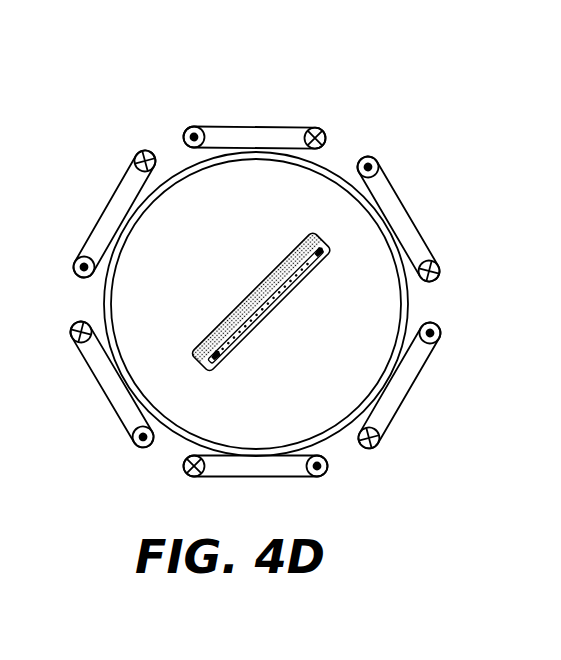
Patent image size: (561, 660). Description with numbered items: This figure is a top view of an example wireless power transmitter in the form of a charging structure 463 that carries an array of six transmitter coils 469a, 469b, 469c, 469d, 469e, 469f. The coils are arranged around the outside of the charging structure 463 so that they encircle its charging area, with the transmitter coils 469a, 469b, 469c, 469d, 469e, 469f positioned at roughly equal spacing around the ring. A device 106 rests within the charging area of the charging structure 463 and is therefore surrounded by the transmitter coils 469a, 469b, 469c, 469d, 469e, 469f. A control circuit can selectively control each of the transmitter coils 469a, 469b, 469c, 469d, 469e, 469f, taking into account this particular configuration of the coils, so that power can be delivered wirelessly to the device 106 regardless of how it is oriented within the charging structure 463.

The charging structure 463 is at (124, 94).
The transmitter coil 469a is at (112, 192).
The transmitter coil 469b is at (262, 127).
The transmitter coil 469c is at (390, 188).
The transmitter coil 469d is at (385, 424).
The transmitter coil 469e is at (272, 473).
The transmitter coil 469f is at (108, 395).
The device 106 is at (260, 287).